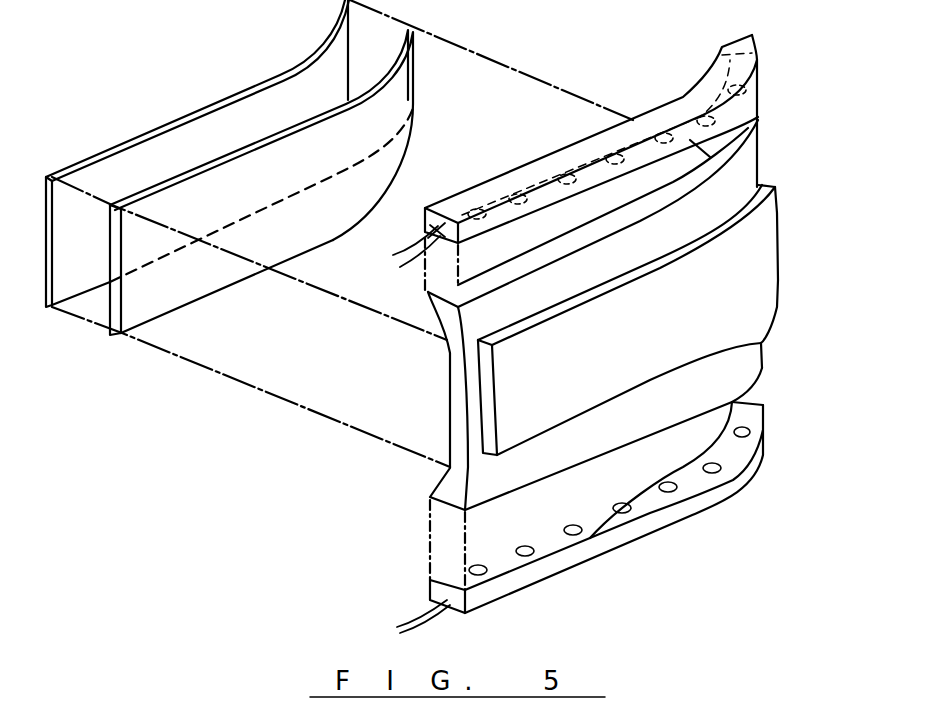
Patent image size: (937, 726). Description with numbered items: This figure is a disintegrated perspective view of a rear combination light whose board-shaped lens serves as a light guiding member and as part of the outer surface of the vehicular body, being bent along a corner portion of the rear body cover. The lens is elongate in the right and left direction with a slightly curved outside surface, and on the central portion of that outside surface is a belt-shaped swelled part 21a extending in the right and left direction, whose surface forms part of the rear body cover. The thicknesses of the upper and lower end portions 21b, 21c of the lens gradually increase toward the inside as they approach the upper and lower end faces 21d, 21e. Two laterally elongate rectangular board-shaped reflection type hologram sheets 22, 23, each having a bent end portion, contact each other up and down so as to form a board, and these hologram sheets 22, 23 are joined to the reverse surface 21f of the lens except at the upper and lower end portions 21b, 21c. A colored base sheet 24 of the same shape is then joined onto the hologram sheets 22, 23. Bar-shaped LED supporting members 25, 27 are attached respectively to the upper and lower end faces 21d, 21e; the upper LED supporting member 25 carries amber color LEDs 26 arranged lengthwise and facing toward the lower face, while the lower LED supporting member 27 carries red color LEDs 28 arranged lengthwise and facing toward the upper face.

The swelled part 21a is at (480, 408).
The upper end portion 21b is at (447, 313).
The lower end portion 21c is at (450, 492).
The upper end face 21d is at (737, 147).
The lower end face 21e is at (747, 395).
The reverse surface 21f is at (448, 363).
The reflection type hologram sheet 22 is at (397, 117).
The reflection type hologram sheet 23 is at (390, 190).
The colored base sheet 24 is at (208, 103).
The upper LED supporting member 25 is at (653, 110).
The amber color LEDs 26 is at (567, 180).
The lower LED supporting member 27 is at (642, 532).
The red color LEDs 28 is at (573, 530).